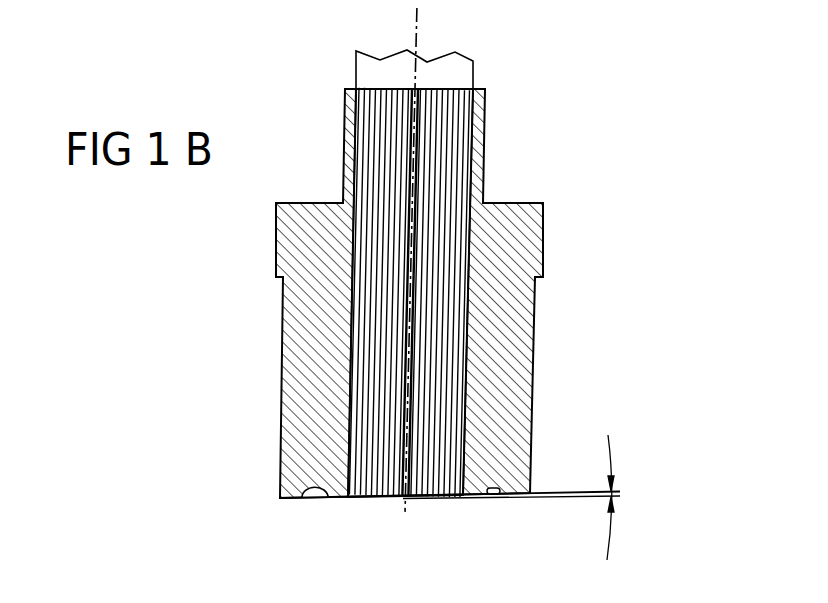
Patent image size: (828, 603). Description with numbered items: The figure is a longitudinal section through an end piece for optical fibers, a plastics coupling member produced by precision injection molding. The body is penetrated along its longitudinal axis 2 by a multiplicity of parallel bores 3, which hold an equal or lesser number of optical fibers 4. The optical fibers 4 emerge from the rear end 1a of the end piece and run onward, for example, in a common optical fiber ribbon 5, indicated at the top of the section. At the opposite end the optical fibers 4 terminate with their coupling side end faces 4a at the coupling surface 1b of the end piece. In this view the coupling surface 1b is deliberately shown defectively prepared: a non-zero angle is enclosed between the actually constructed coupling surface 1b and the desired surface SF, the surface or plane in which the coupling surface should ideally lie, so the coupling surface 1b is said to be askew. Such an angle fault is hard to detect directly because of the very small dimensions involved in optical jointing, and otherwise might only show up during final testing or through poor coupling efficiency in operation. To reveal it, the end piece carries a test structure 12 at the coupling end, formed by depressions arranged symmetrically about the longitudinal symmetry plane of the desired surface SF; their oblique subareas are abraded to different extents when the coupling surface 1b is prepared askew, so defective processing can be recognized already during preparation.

The rear end 1a is at (486, 148).
The coupling surface 1b is at (520, 495).
The longitudinal axis 2 is at (419, 25).
The parallel bores 3 is at (356, 89).
The optical fibers 4 is at (475, 88).
The coupling side end faces 4a is at (352, 500).
The optical fiber ribbon 5 is at (396, 67).
The test structure 12 is at (498, 507).
The desired surface SF is at (440, 503).